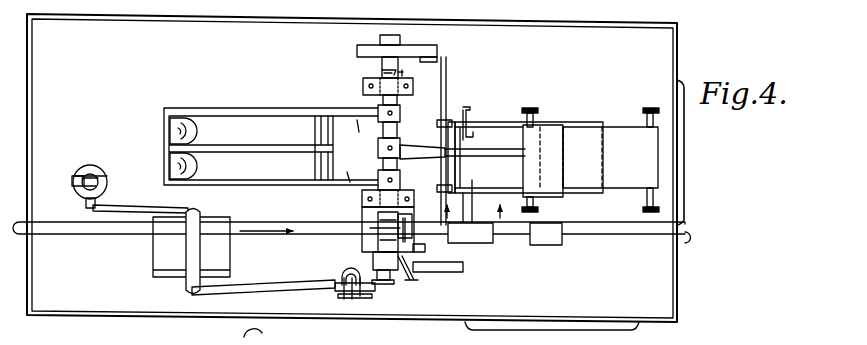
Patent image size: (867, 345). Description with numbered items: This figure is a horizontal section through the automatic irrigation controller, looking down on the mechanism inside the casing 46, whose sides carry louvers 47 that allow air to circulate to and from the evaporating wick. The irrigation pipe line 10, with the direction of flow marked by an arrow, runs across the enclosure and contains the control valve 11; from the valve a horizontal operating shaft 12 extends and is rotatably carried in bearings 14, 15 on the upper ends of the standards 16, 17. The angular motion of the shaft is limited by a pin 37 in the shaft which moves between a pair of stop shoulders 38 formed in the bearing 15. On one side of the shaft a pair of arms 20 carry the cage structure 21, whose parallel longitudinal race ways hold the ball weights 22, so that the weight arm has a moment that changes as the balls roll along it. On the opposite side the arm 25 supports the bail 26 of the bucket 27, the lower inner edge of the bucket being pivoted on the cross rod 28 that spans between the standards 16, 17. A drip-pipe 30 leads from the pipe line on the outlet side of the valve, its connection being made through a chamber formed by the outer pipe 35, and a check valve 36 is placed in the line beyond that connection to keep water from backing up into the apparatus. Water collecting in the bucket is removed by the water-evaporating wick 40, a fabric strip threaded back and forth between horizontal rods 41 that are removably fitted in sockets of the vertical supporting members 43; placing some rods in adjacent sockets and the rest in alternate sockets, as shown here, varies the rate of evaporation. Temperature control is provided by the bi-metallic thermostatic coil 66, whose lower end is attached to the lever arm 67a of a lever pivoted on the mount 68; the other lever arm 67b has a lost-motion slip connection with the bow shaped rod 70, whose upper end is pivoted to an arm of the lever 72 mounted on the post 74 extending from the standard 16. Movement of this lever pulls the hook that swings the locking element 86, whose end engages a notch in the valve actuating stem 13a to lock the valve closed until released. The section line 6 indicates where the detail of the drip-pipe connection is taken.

The section line 6 is at (474, 206).
The irrigation pipe line 10 is at (131, 234).
The control valve 11 is at (360, 210).
The operating shaft 12 is at (396, 168).
The valve actuating stem 13a is at (413, 283).
The bearing 14 is at (360, 194).
The bearing 15 is at (362, 86).
The standard 16 is at (362, 241).
The standard 17 is at (357, 51).
The arms 20 is at (353, 151).
The cage structure 21 is at (254, 104).
The ball weights 22 is at (168, 165).
The arm 25 is at (410, 146).
The bail 26 is at (489, 162).
The bucket 27 is at (498, 122).
The cross rod 28 is at (447, 84).
The drip-pipe 30 is at (473, 205).
The outer pipe 35 is at (480, 243).
The check valve 36 is at (547, 228).
The pin 37 is at (381, 72).
The stop shoulders 38 is at (401, 76).
The water-evaporating wick 40 is at (620, 127).
The rods 41 is at (536, 117).
The vertical supporting members 43 is at (652, 106).
The casing 46 is at (676, 296).
The louvers 47 is at (684, 187).
The bi-metallic thermostatic coil 66 is at (88, 165).
The lever arm 67a is at (128, 208).
The lever arm 67b is at (258, 290).
The mount 68 is at (186, 252).
The bow shaped rod 70 is at (354, 300).
The lever 72 is at (349, 277).
The post 74 is at (385, 282).
The locking element 86 is at (455, 272).